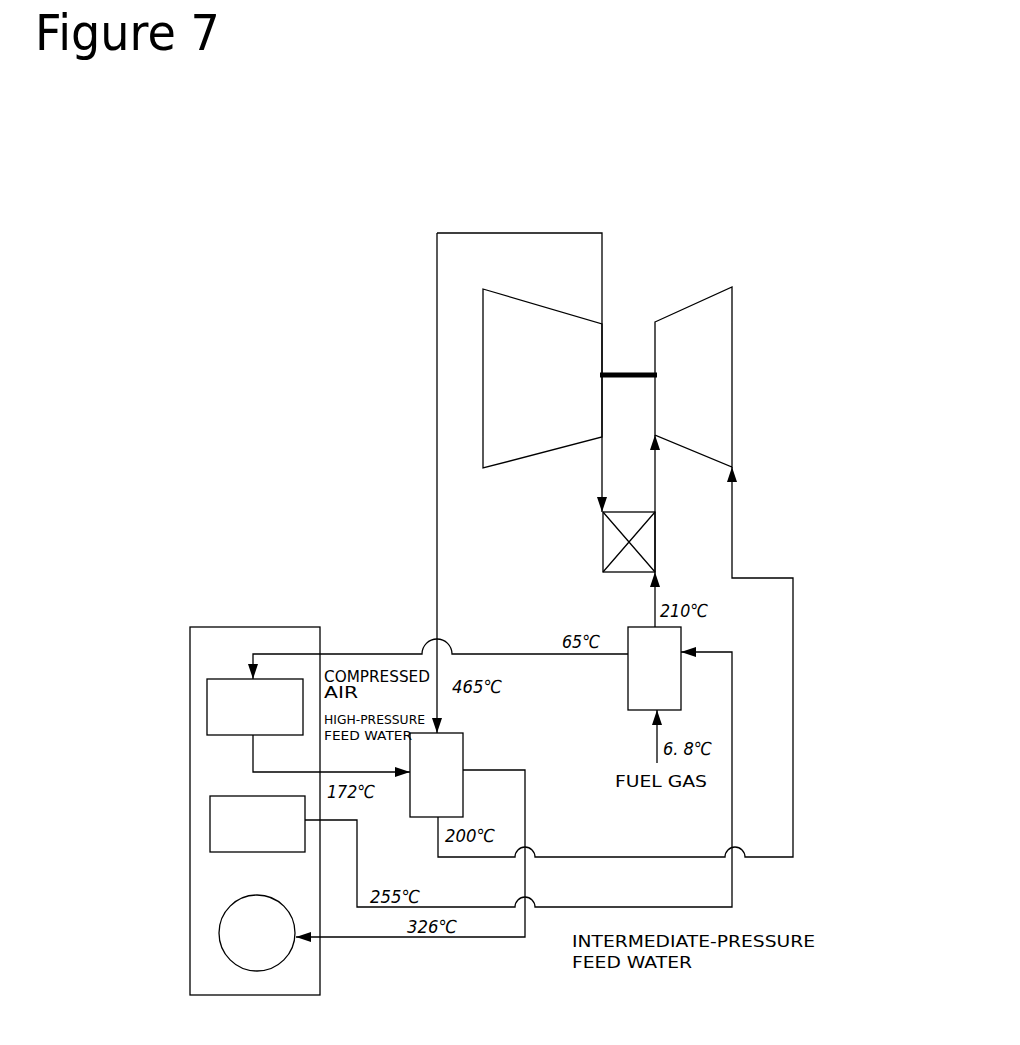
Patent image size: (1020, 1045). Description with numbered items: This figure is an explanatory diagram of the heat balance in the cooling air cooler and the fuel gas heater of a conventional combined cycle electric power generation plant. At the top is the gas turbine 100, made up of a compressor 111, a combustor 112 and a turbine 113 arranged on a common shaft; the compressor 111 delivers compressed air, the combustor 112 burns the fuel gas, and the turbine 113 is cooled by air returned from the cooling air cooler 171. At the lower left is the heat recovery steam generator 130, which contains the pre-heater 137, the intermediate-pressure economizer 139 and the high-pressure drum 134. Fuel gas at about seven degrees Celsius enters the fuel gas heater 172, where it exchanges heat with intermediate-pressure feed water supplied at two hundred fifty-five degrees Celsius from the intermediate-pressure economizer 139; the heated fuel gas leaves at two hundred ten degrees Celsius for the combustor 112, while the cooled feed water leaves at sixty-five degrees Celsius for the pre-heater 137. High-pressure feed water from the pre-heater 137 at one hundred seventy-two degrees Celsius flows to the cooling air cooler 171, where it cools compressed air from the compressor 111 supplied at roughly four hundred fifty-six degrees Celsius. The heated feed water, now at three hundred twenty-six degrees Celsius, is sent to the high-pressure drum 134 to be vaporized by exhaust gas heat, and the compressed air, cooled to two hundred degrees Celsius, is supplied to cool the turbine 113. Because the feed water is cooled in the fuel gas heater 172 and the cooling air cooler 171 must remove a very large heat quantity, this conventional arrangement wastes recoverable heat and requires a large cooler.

The gas turbine 100 is at (765, 270).
The compressor 111 is at (557, 308).
The combustor 112 is at (603, 542).
The turbine 113 is at (710, 288).
The heat recovery steam generator 130 is at (292, 627).
The high-pressure drum 134 is at (248, 896).
The pre-heater 137 is at (238, 679).
The intermediate-pressure economizer 139 is at (242, 796).
The cooling air cooler 171 is at (463, 750).
The fuel gas heater 172 is at (628, 670).